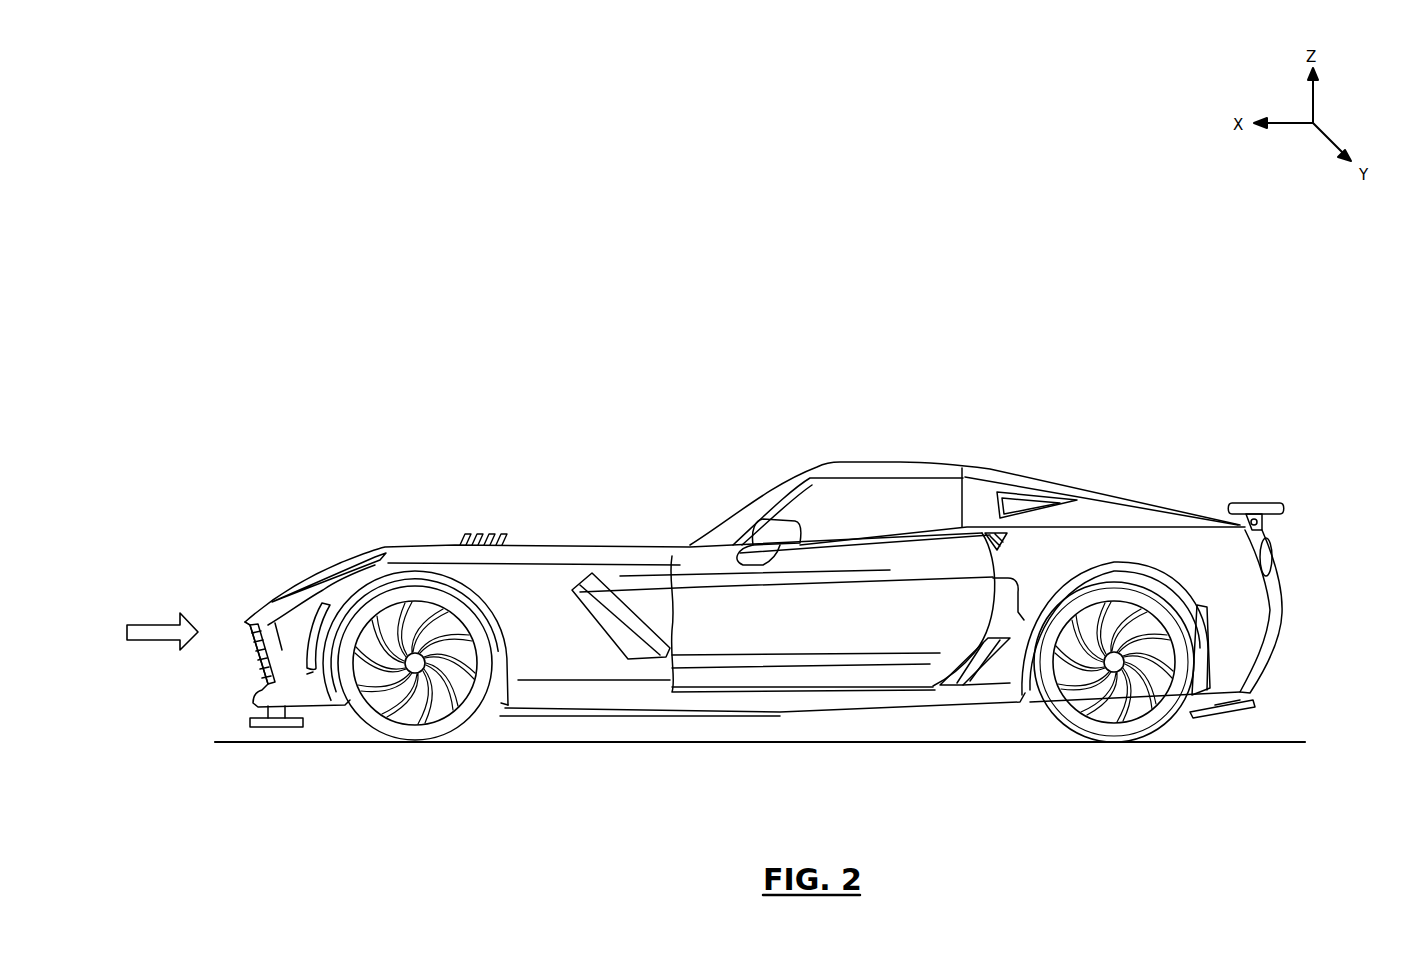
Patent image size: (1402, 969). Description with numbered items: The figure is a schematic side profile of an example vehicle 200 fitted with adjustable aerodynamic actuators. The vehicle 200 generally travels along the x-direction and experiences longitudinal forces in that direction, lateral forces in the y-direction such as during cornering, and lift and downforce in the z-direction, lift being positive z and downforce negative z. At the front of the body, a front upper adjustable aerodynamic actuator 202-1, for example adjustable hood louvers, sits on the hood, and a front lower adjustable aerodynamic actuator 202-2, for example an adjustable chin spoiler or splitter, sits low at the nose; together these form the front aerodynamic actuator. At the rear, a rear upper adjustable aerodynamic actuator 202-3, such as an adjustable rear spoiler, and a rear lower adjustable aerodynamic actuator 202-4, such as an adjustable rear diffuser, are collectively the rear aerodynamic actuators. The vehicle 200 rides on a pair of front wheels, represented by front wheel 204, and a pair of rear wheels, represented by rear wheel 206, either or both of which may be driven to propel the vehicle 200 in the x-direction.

The vehicle 200 is at (656, 319).
The front upper adjustable aerodynamic actuator 202-1 is at (462, 511).
The front lower adjustable aerodynamic actuator 202-2 is at (247, 708).
The rear upper adjustable aerodynamic actuator 202-3 is at (1269, 490).
The rear lower adjustable aerodynamic actuator 202-4 is at (1252, 715).
The front wheel 204 is at (380, 726).
The rear wheel 206 is at (1082, 727).